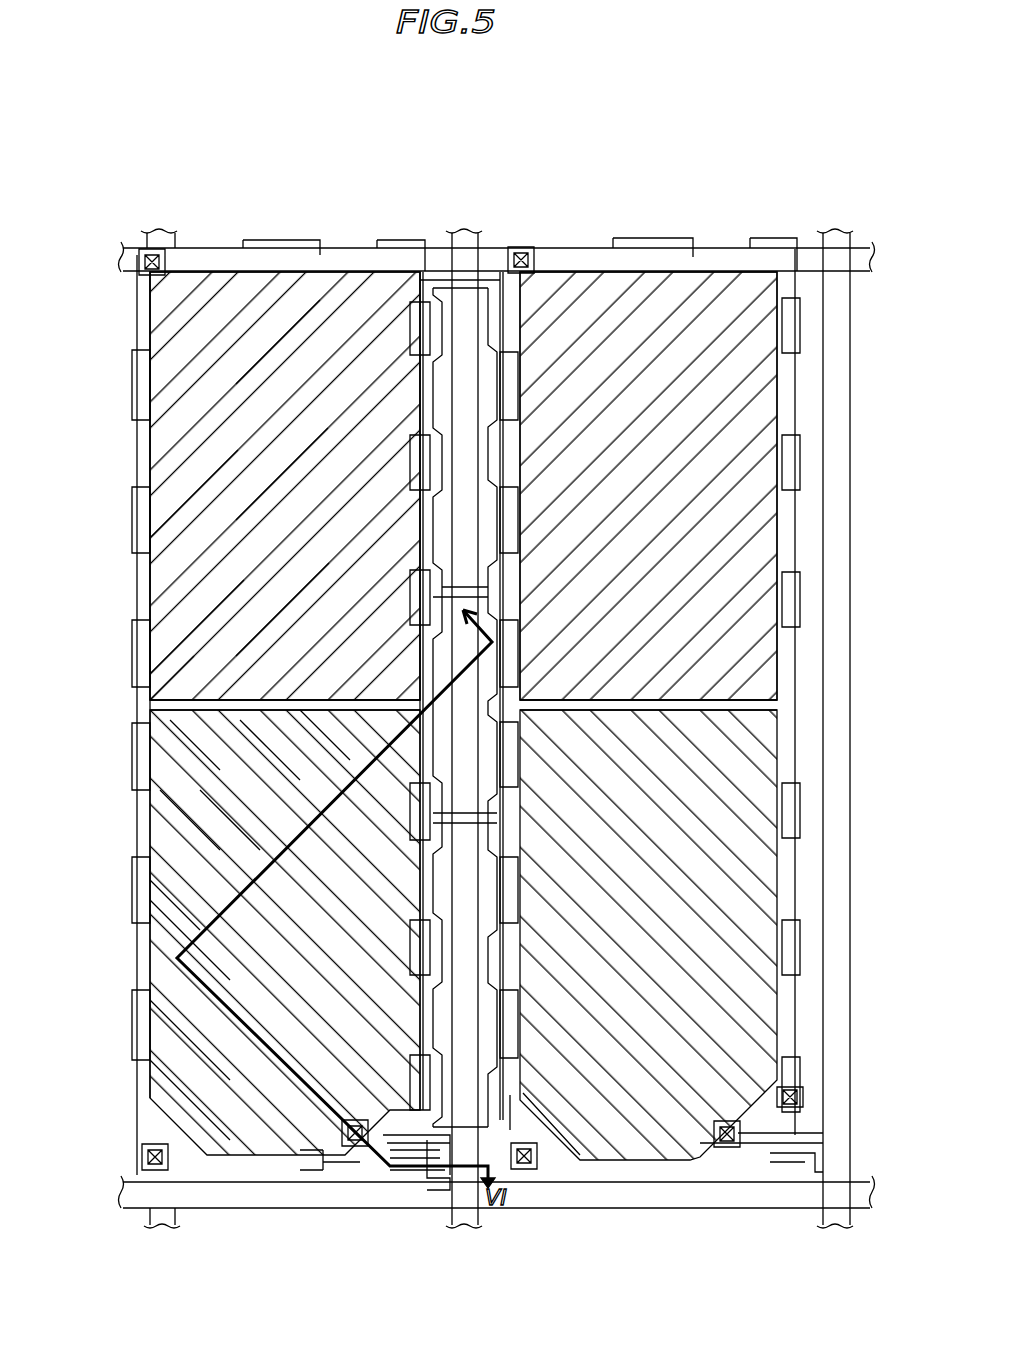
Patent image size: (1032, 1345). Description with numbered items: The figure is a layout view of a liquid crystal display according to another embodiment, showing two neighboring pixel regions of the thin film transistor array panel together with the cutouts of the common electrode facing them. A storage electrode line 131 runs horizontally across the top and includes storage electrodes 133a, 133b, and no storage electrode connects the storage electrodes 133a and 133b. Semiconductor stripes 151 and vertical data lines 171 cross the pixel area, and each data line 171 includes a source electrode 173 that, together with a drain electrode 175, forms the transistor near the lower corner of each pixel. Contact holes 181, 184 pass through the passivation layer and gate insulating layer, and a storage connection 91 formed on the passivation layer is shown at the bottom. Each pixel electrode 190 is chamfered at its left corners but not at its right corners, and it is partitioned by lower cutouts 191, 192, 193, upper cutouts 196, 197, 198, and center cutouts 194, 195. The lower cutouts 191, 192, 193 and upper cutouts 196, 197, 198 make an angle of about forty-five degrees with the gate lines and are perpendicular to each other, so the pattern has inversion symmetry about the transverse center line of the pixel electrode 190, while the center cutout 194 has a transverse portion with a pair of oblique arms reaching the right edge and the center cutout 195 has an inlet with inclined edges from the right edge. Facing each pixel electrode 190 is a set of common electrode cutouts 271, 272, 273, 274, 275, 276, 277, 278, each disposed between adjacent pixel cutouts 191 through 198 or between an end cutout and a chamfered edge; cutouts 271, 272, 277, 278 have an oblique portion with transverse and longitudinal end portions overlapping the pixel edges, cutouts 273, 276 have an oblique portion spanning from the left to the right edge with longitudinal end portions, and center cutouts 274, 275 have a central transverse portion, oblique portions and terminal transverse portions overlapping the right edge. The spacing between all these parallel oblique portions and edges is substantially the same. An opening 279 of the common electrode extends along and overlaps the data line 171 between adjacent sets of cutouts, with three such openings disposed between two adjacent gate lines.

The storage connection 91 is at (547, 1197).
The storage electrode line 131 is at (343, 244).
The storage electrode 133a is at (137, 258).
The storage electrode 133b is at (402, 239).
The semiconductor stripe 151 is at (420, 1183).
The data line 171 is at (478, 1224).
The source electrode 173 is at (438, 1197).
The drain electrode 175 is at (402, 1177).
The contact hole 181 is at (345, 1148).
The contact hole 184 is at (525, 1173).
The pixel electrode 190 is at (223, 242).
The lower cutout 191 is at (170, 1023).
The lower cutout 192 is at (217, 943).
The lower cutout 193 is at (240, 840).
The center cutout 194 is at (253, 840).
The center cutout 195 is at (273, 760).
The upper cutout 196 is at (255, 565).
The upper cutout 197 is at (250, 430).
The upper cutout 198 is at (250, 297).
The lower cutout of common electrode 271 is at (165, 1090).
The lower cutout of common electrode 272 is at (127, 905).
The lower cutout of common electrode 273 is at (340, 727).
The center cutout of common electrode 274 is at (213, 738).
The center cutout of common electrode 275 is at (190, 700).
The upper cutout of common electrode 276 is at (143, 617).
The upper cutout of common electrode 277 is at (143, 482).
The upper cutout of common electrode 278 is at (143, 352).
The opening 279 is at (490, 752).